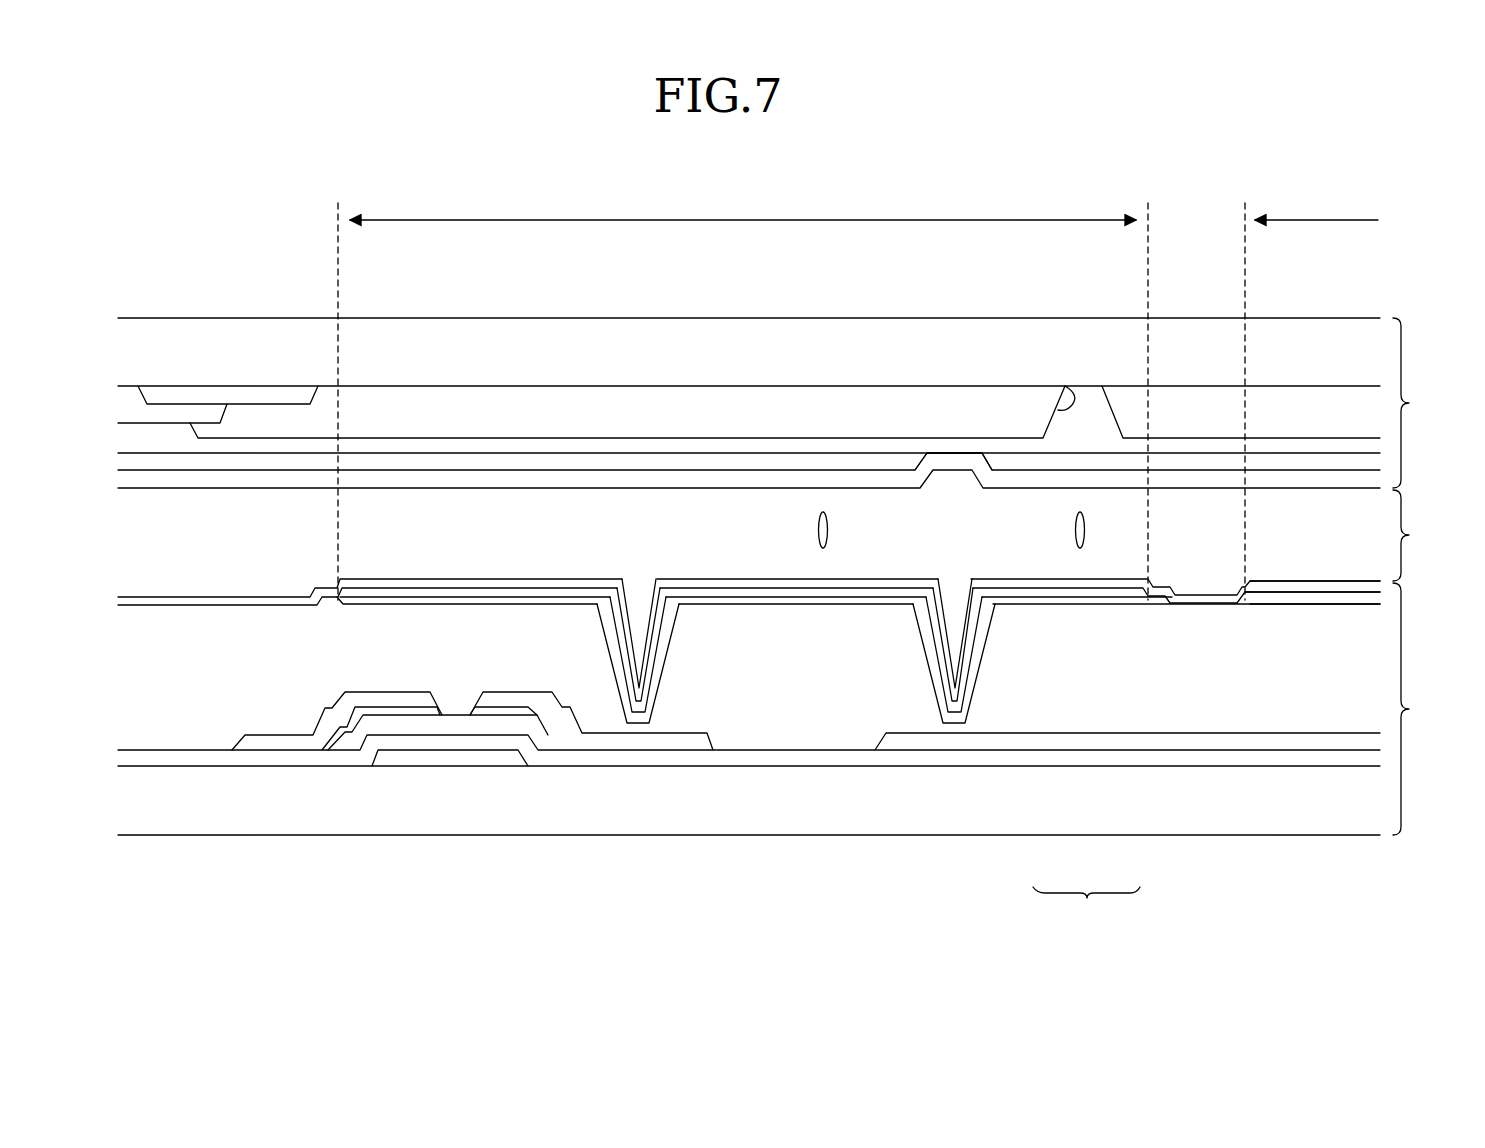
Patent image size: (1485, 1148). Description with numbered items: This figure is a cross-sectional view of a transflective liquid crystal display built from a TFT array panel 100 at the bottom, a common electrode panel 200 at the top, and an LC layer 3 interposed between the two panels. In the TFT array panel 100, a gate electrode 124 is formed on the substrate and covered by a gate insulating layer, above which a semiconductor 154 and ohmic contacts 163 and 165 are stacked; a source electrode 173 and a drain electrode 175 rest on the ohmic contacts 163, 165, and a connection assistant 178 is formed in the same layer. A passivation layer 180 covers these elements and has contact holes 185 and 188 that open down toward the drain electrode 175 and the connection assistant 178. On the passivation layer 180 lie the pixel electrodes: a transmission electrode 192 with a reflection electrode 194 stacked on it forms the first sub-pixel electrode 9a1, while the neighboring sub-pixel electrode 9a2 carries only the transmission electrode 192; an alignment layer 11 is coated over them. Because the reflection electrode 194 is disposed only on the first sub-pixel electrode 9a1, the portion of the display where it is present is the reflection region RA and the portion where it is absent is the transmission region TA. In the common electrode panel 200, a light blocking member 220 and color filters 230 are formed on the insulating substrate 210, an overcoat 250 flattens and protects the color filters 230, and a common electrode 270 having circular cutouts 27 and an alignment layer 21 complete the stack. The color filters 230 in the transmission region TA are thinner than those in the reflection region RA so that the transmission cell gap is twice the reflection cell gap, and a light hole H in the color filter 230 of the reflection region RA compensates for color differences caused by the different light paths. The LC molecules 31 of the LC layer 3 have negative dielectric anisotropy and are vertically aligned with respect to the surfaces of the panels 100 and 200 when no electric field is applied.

The reflection region RA is at (743, 394).
The transmission region TA is at (1311, 392).
The insulating substrate 210 is at (298, 330).
The light blocking member 220 is at (195, 395).
The color filter 230 is at (465, 415).
The light hole H is at (1073, 400).
The overcoat 250 is at (680, 445).
The common electrode 270 is at (757, 462).
The alignment layer 21 is at (545, 478).
The circular cutout 27 is at (938, 450).
The LC molecule 31 is at (1080, 505).
The passivation layer 180 is at (185, 725).
The reflection electrode 194 is at (1118, 590).
The transmission electrode 192 is at (1060, 598).
The first sub-pixel electrode 9a1 is at (1086, 908).
The alignment layer 11 is at (1317, 590).
The sub-pixel electrode 9a2 is at (1295, 600).
The contact hole 185 is at (670, 633).
The contact hole 188 is at (921, 658).
The gate electrode 124 is at (415, 762).
The semiconductor 154 is at (470, 722).
The ohmic contact 163 is at (385, 718).
The ohmic contact 165 is at (557, 712).
The source electrode 173 is at (280, 742).
The drain electrode 175 is at (658, 740).
The connection assistant 178 is at (948, 740).
The TFT array panel 100 is at (786, 709).
The common electrode panel 200 is at (1424, 403).
The LC layer 3 is at (1416, 535).